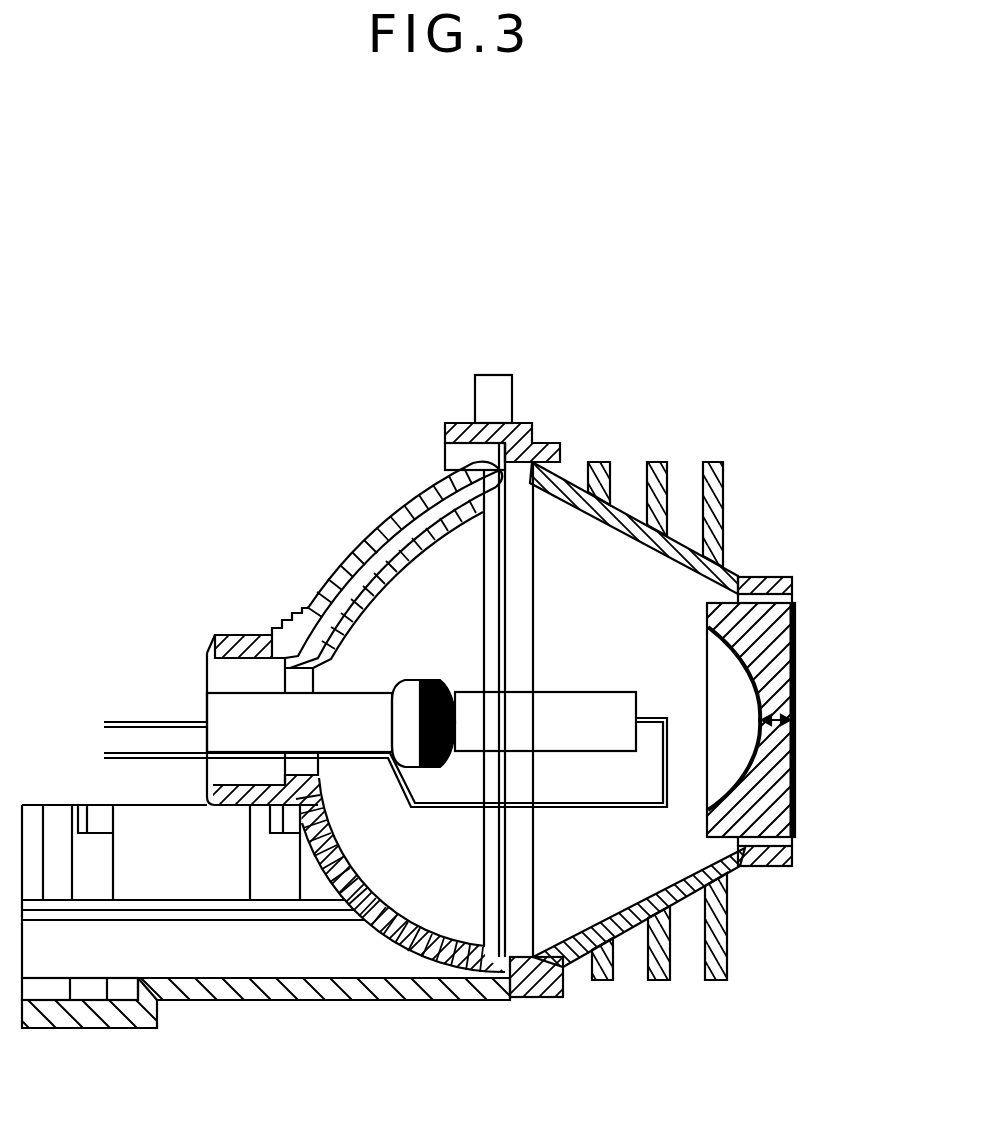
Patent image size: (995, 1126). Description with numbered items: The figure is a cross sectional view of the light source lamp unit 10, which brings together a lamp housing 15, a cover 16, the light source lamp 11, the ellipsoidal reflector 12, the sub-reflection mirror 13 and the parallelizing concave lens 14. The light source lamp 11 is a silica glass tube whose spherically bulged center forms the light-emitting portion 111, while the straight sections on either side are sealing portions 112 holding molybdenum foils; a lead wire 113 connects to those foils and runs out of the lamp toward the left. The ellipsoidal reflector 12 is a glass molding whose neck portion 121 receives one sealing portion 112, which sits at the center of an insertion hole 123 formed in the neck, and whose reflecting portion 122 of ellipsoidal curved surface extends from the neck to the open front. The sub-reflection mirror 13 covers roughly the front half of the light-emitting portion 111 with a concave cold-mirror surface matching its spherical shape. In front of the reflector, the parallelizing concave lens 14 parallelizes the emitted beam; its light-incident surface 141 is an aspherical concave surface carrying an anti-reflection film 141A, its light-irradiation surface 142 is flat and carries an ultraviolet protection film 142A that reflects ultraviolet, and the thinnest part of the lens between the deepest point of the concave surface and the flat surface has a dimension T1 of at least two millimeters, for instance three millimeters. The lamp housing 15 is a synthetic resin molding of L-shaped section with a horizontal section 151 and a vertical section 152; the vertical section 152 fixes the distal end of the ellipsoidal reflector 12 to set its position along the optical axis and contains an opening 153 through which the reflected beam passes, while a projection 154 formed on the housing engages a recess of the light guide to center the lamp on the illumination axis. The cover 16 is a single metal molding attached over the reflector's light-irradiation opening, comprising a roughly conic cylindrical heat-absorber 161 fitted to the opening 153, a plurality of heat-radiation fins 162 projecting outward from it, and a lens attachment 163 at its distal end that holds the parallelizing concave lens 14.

The light source lamp unit 10 is at (734, 320).
The light source lamp 11 is at (344, 711).
The light-emitting portion 111 is at (404, 692).
The sealing portion 112 is at (336, 735).
The lead wire 113 is at (125, 722).
The ellipsoidal reflector 12 is at (305, 687).
The neck portion 121 is at (240, 634).
The reflecting portion 122 is at (358, 545).
The insertion hole 123 is at (241, 678).
The sub-reflection mirror 13 is at (432, 680).
The parallelizing concave lens 14 is at (755, 719).
The light-incident surface 141 is at (709, 634).
The anti-reflection film 141A is at (708, 662).
The light-irradiation surface 142 is at (797, 608).
The ultraviolet protection film 142A is at (797, 826).
The lamp housing 15 is at (292, 942).
The horizontal section 151 is at (242, 1000).
The vertical section 152 is at (516, 430).
The opening 153 is at (515, 997).
The projection 154 is at (490, 374).
The cover 16 is at (674, 708).
The heat-absorber 161 is at (738, 560).
The heat-radiation fins 162 is at (600, 462).
The lens attachment 163 is at (776, 577).
The dimension of the thinnest part T1 is at (782, 728).